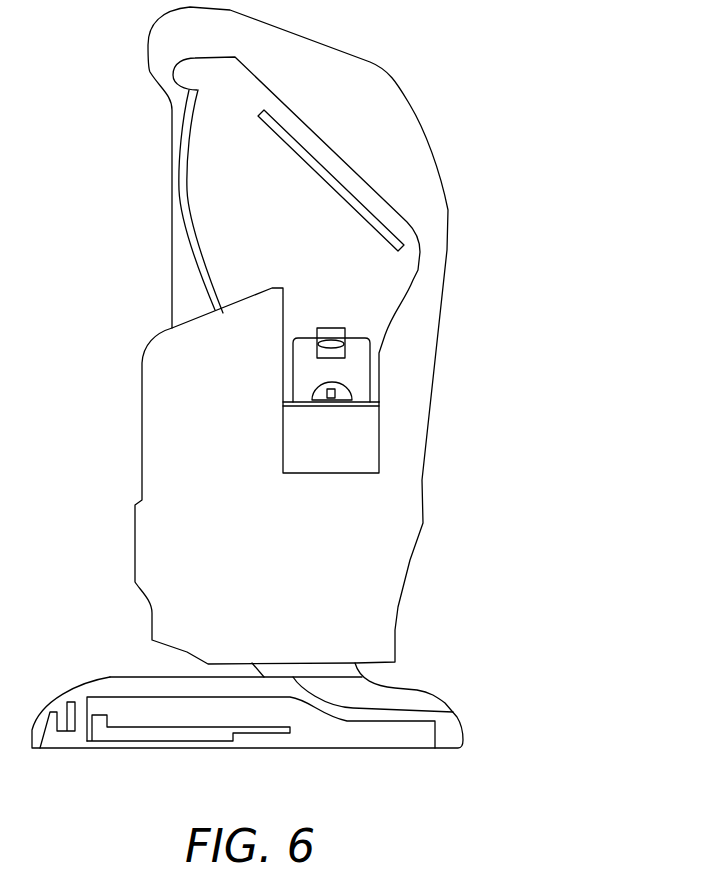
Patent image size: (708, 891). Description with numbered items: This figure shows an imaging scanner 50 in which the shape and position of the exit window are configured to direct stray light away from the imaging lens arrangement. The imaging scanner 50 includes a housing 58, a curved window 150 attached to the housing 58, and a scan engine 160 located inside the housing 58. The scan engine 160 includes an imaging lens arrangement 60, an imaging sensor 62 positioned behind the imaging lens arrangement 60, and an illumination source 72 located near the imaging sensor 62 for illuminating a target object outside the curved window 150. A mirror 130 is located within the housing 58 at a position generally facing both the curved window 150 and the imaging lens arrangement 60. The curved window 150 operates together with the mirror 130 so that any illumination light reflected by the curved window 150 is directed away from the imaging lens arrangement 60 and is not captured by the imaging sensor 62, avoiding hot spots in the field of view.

The imaging scanner 50 is at (500, 635).
The housing 58 is at (425, 483).
The imaging lens arrangement 60 is at (345, 350).
The imaging sensor 62 is at (333, 395).
The illumination source 72 is at (352, 393).
The mirror 130 is at (330, 171).
The curved window 150 is at (179, 145).
The scan engine 160 is at (293, 379).